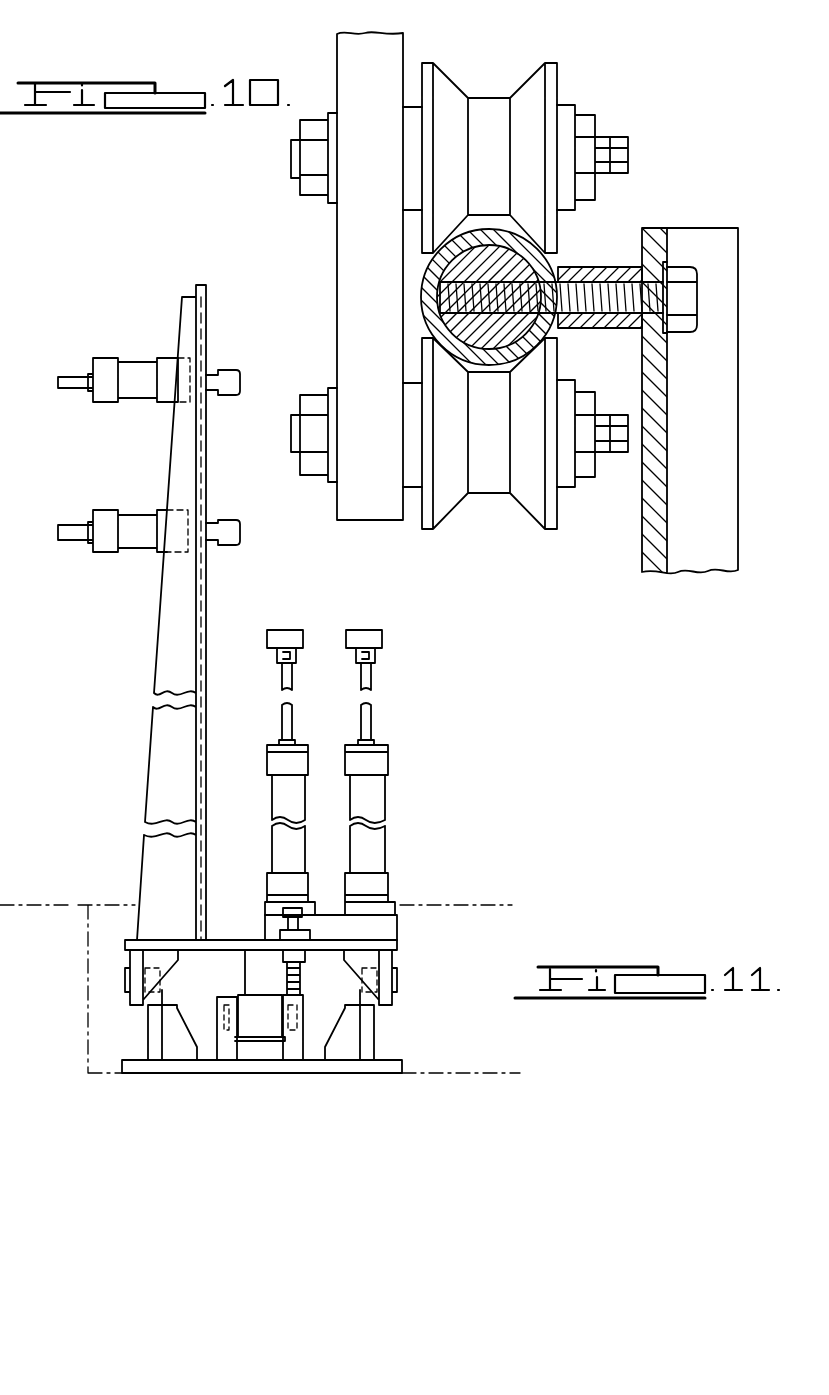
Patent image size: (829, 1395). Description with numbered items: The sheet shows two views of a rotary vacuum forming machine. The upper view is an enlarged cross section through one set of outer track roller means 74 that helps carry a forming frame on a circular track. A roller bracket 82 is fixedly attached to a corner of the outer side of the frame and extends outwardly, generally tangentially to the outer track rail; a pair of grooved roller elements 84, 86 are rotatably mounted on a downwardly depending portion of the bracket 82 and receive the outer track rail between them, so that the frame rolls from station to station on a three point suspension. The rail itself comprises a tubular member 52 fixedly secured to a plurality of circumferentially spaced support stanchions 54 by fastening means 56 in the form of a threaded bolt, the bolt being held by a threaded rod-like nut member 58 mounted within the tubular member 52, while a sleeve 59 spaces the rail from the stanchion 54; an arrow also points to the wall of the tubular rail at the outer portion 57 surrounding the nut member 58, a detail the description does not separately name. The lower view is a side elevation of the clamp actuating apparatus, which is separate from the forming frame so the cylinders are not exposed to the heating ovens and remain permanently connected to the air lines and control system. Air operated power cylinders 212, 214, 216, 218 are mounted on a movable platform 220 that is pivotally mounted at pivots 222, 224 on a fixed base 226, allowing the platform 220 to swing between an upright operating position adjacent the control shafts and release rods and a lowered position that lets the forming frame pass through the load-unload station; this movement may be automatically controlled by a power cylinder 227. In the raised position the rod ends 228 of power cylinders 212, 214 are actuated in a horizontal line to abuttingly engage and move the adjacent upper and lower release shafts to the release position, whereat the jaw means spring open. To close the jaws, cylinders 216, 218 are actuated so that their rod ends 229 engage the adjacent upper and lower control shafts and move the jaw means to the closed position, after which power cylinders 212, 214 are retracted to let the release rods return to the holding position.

In FIG. 10, the roller bracket 82 is at (337, 60).
In FIG. 10, the grooved roller element 84 is at (557, 86).
In FIG. 10, the grooved roller element 86 is at (558, 517).
In FIG. 10, the outer track roller means 74 is at (334, 248).
In FIG. 10, the tube sheath 57 is at (559, 262).
In FIG. 10, the threaded rod-like nut member 58 is at (467, 306).
In FIG. 10, the tubular member 52 is at (557, 331).
In FIG. 10, the sleeve 59 is at (606, 266).
In FIG. 10, the fastening means 56 is at (683, 272).
In FIG. 10, the support stanchion 54 is at (720, 425).
In FIG. 11, the air operated power cylinder 212 is at (106, 394).
In FIG. 11, the air operated power cylinder 214 is at (106, 550).
In FIG. 11, the rod end 228 is at (233, 382).
In FIG. 11, the rod end 229 is at (282, 629).
In FIG. 11, the air operated power cylinder 216 is at (272, 813).
In FIG. 11, the air operated power cylinder 218 is at (385, 795).
In FIG. 11, the movable platform 220 is at (397, 946).
In FIG. 11, the pivot mounting 222 is at (126, 980).
In FIG. 11, the pivot mounting 224 is at (392, 985).
In FIG. 11, the fixed base 226 is at (176, 1073).
In FIG. 11, the power cylinder 227 is at (263, 1034).